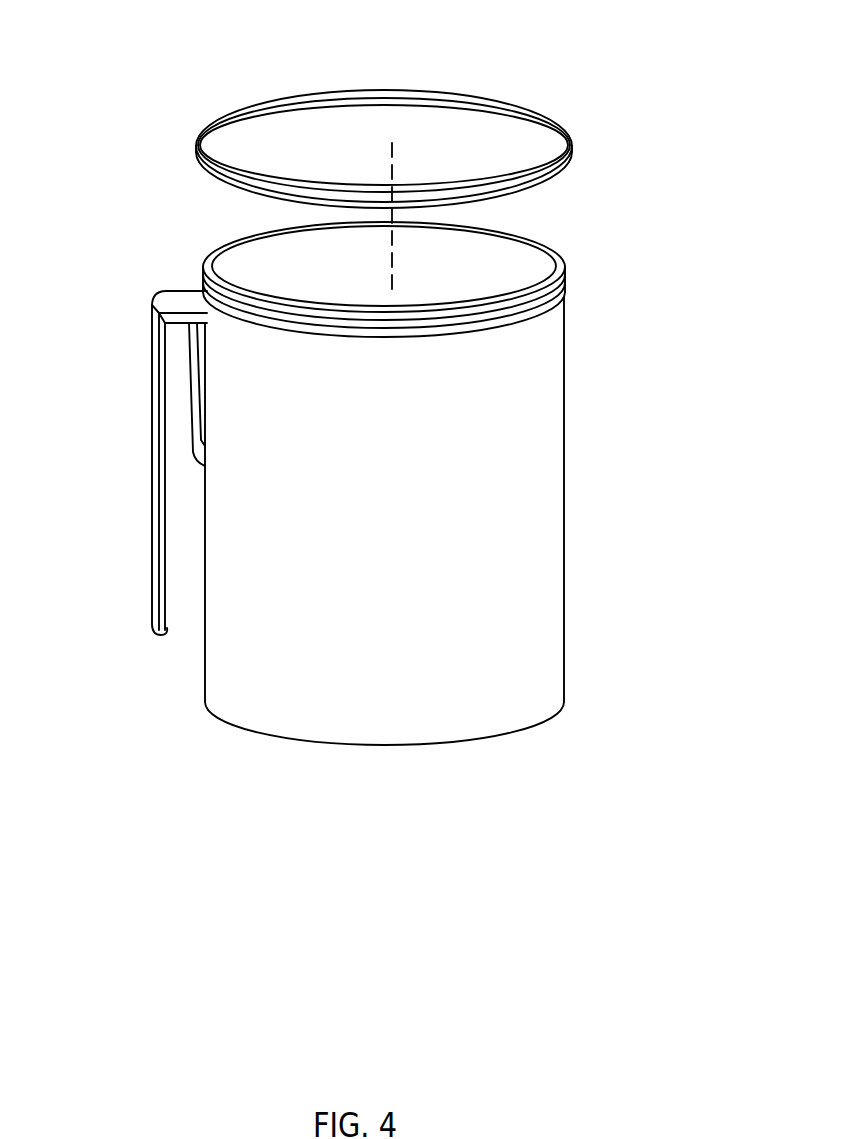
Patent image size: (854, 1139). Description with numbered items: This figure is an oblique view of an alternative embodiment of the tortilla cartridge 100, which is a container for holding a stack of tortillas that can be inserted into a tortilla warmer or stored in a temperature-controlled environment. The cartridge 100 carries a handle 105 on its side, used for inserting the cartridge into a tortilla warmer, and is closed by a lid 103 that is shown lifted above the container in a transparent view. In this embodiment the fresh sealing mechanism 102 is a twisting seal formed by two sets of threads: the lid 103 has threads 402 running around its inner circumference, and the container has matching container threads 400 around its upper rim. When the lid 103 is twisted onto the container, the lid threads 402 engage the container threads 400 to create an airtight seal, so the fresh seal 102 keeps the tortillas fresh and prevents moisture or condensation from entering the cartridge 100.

The cartridge 100 is at (592, 492).
The fresh sealing mechanism 102 is at (582, 162).
The lid 103 is at (466, 82).
The handle 105 is at (160, 473).
The container threads 400 is at (365, 345).
The lid threads 402 is at (260, 195).